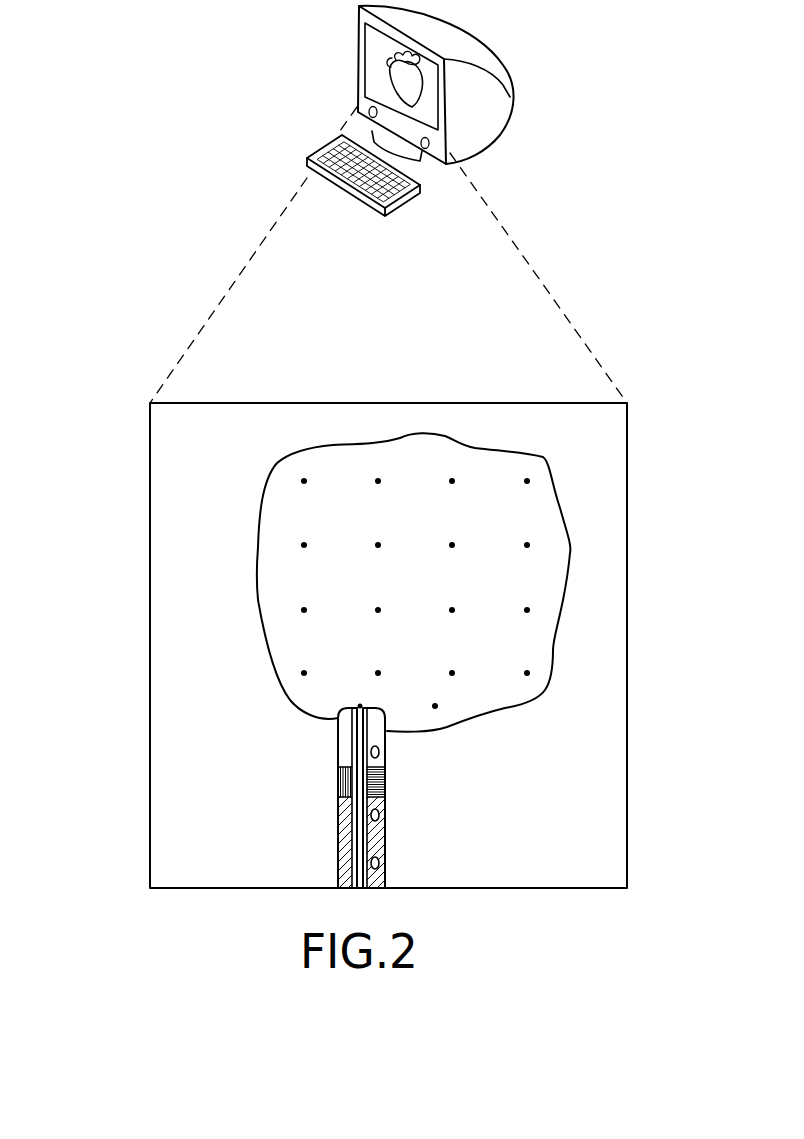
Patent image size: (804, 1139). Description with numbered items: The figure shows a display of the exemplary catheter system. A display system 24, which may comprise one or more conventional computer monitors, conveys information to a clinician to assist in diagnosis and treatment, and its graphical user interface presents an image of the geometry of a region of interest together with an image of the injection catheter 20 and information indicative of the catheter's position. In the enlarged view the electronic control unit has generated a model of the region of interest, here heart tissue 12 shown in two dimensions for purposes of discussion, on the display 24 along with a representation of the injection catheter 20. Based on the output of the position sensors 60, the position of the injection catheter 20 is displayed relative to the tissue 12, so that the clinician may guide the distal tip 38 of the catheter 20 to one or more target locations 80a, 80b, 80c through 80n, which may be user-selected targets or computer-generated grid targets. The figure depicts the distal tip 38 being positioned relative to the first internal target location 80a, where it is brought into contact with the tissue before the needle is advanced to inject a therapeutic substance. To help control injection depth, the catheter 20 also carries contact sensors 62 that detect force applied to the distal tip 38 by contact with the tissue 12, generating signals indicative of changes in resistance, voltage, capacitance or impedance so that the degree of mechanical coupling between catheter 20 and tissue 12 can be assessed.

The tissue 12 is at (422, 97).
The injection catheter 20 is at (348, 798).
The display system 24 is at (352, 65).
The distal tip 38 is at (338, 728).
The position sensors 60 is at (380, 752).
The contact sensors 62 is at (337, 787).
The first internal target location 80a is at (360, 707).
The target location 80b is at (435, 706).
The target location 80c is at (304, 481).
The target location 80n is at (378, 481).